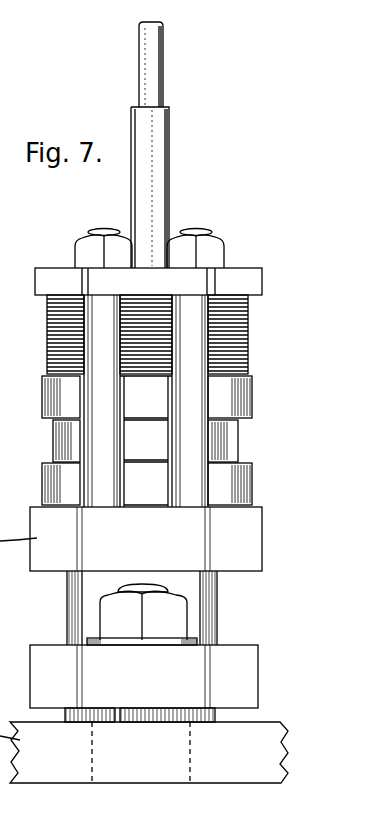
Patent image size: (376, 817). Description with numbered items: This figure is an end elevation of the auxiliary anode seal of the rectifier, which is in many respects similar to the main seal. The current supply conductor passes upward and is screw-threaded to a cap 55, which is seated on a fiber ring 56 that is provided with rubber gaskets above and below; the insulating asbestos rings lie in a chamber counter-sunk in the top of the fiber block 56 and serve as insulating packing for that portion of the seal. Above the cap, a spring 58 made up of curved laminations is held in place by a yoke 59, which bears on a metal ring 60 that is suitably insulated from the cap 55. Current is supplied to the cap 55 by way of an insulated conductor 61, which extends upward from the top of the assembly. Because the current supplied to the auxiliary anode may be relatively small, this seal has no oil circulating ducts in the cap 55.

The insulated conductor 61 is at (158, 81).
The yoke 59 is at (50, 269).
The spring 58 is at (63, 313).
The metal ring 60 is at (42, 373).
The cap 55 is at (58, 433).
The fiber ring 56 is at (42, 479).